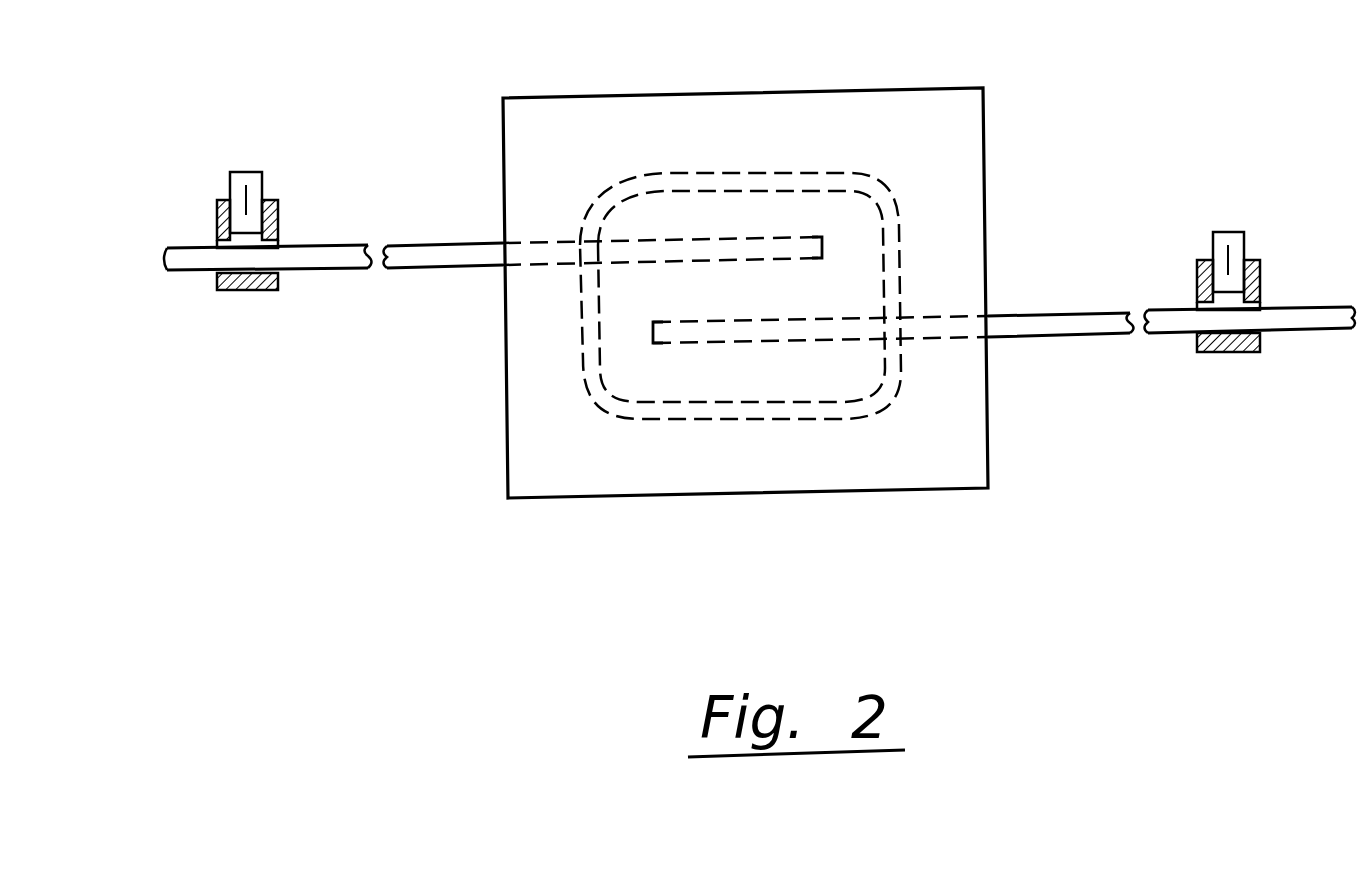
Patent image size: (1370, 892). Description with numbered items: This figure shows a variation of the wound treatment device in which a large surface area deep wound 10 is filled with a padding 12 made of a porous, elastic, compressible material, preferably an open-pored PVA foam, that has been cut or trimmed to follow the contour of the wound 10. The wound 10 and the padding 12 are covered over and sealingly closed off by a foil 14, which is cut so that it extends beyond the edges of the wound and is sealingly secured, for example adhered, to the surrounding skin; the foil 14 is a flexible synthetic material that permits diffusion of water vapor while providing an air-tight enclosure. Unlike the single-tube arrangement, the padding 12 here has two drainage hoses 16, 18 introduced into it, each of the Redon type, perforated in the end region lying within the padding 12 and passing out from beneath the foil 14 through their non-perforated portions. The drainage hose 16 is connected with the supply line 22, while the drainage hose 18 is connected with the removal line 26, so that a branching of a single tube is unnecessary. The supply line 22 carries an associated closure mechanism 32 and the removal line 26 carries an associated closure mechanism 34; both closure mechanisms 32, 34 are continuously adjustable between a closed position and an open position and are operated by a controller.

The wound 10 is at (718, 420).
The padding 12 is at (788, 207).
The foil 14 is at (688, 108).
The drainage hose 16 is at (720, 242).
The drainage hose 18 is at (803, 340).
The supply line 22 is at (310, 250).
The removal line 26 is at (1180, 310).
The closure mechanism 32 is at (275, 202).
The closure mechanism 34 is at (1257, 262).